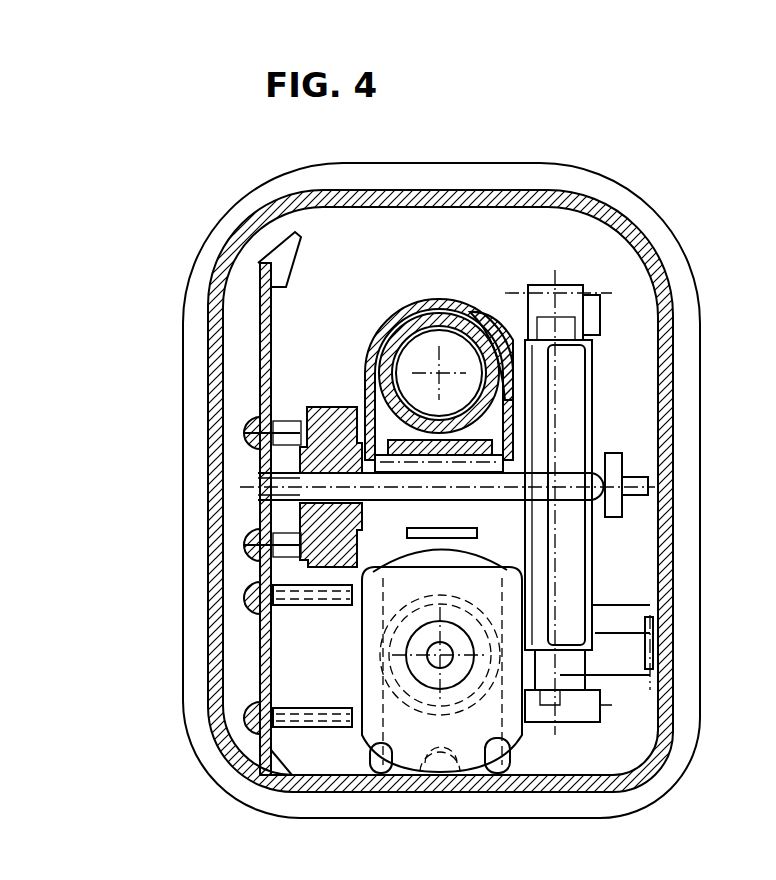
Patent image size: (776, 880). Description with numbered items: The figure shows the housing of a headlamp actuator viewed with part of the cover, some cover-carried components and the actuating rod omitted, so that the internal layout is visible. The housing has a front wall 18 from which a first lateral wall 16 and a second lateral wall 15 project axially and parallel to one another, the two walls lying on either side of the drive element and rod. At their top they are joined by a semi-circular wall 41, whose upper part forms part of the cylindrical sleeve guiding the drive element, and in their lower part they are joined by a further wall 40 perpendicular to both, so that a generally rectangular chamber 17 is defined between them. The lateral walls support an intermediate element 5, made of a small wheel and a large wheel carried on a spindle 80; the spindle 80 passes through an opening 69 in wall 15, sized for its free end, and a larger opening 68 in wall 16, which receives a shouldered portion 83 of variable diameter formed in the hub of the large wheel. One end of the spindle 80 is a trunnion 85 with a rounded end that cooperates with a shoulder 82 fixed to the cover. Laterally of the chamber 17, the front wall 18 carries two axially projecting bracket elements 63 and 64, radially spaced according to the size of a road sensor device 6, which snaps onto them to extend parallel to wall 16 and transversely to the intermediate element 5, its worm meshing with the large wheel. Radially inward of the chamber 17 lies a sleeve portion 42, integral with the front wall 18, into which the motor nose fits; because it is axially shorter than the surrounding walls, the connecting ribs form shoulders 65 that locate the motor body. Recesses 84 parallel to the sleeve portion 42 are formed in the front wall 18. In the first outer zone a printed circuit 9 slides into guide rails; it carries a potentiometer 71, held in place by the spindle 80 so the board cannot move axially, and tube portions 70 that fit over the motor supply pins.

The intermediate element 5 is at (560, 533).
The road sensor device 6 is at (660, 715).
The printed circuit 9 is at (262, 627).
The second projecting lateral wall 15 is at (365, 372).
The lateral wall 16 is at (513, 420).
The rectangular chamber 17 is at (258, 452).
The front wall 18 is at (343, 289).
The further wall 40 is at (362, 588).
The semi-circular wall 41 is at (450, 297).
The sleeve portion 42 is at (425, 760).
The bracket element 63 is at (600, 303).
The bracket element 64 is at (628, 655).
The shoulders 65 is at (393, 753).
The opening 68 is at (540, 447).
The opening 69 is at (290, 513).
The tube portions 70 is at (318, 605).
The potentiometer 71 is at (307, 410).
The spindle 80 is at (258, 480).
The shoulder 82 is at (600, 450).
The shouldered portion 83 is at (560, 537).
The recesses 84 is at (232, 762).
The trunnion 85 is at (627, 458).